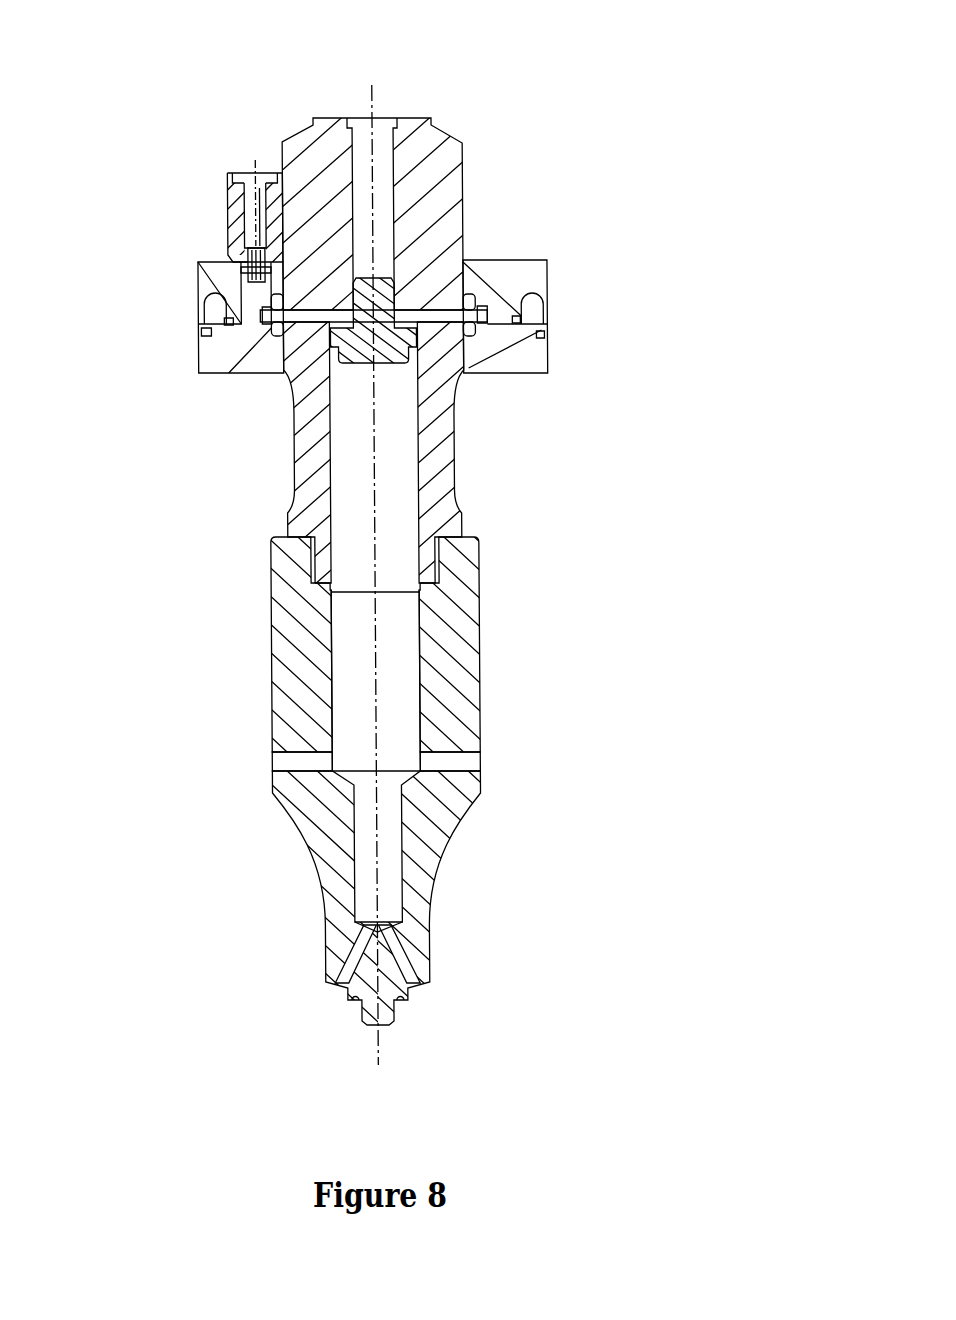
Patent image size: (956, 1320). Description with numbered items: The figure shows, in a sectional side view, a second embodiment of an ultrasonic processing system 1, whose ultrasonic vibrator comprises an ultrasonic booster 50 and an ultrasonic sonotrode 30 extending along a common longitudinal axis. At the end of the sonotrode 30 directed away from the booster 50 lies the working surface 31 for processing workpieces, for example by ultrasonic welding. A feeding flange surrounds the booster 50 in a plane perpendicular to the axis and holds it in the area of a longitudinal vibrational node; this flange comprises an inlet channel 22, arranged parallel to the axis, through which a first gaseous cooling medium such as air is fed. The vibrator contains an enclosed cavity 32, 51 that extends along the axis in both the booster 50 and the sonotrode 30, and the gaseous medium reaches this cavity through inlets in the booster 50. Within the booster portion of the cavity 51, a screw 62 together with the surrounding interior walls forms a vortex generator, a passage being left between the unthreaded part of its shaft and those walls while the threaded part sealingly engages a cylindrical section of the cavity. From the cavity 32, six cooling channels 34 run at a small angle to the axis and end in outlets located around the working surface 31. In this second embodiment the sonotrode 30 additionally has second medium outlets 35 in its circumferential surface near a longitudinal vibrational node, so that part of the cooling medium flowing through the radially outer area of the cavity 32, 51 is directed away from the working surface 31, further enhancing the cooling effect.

The ultrasonic processing system 1 is at (650, 57).
The inlet channel 22 is at (243, 212).
The ultrasonic sonotrode 30 is at (470, 664).
The working surface 31 is at (380, 1025).
The enclosed cavity 32 is at (405, 626).
The cooling channels 34 is at (350, 949).
The second medium outlets 35 is at (303, 762).
The ultrasonic booster 50 is at (452, 215).
The enclosed cavity 51 is at (398, 443).
The screw 62 is at (388, 352).